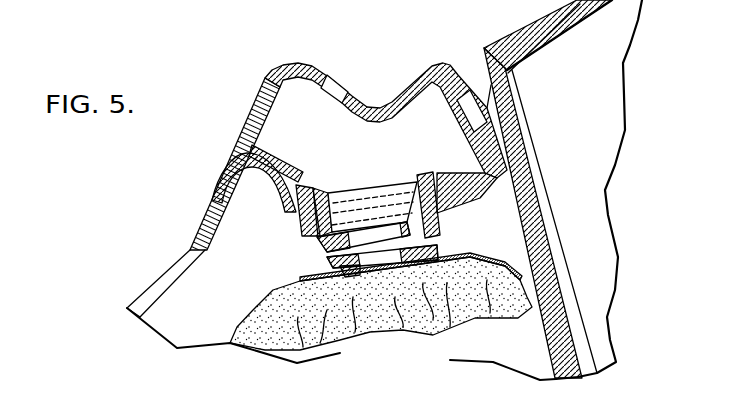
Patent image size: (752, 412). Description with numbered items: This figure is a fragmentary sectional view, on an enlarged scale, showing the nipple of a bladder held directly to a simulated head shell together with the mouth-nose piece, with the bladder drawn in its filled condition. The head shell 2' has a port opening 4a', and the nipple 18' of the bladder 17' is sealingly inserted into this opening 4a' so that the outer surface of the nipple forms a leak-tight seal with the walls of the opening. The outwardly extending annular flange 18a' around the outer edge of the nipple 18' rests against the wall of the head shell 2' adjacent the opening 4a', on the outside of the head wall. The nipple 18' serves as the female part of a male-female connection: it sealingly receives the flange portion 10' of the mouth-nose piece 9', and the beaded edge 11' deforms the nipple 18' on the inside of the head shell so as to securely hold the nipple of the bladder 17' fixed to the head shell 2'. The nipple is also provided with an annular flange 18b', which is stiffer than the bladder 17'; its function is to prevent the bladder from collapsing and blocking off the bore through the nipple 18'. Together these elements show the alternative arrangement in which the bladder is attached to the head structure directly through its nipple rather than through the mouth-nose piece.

The head shell 2' is at (166, 279).
The opening 4a' is at (272, 193).
The mouth-nose piece 9' is at (348, 148).
The flange portion 10' is at (372, 191).
The beaded edge 11' is at (450, 207).
The bladder 17' is at (381, 313).
The nipple 18' is at (348, 249).
The annular flange 18a' is at (458, 171).
The annular flange 18b' is at (363, 279).